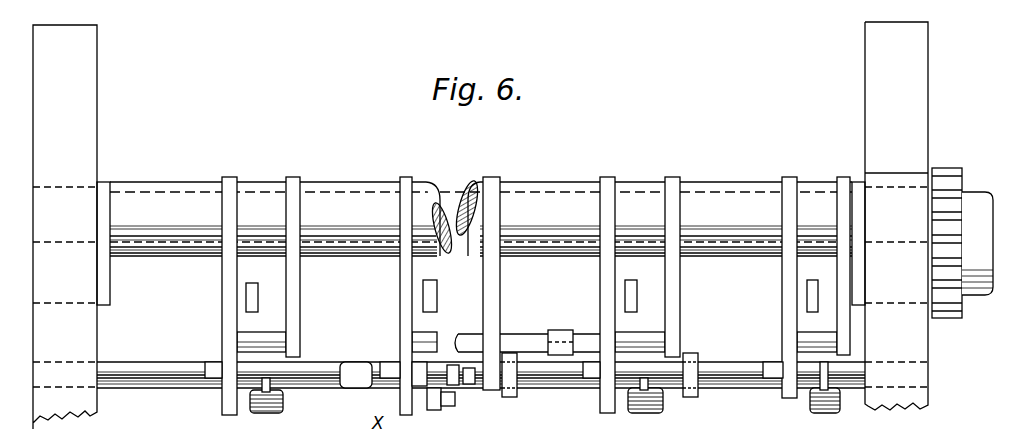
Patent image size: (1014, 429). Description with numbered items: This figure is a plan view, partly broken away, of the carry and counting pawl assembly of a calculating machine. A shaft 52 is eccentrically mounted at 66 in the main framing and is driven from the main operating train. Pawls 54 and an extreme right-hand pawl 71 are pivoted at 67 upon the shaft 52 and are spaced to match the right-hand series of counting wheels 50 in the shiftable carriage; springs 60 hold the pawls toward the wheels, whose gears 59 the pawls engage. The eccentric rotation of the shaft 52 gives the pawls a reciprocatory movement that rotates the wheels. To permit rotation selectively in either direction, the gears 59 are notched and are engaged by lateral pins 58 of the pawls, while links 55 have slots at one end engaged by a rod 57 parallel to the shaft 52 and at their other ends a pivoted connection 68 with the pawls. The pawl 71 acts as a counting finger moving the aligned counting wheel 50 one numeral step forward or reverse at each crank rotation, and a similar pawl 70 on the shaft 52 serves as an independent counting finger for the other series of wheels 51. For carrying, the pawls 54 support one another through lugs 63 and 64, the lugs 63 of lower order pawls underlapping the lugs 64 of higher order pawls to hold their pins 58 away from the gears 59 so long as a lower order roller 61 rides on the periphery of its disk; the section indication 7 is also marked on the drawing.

The section line 7 is at (472, 419).
The counting wheels 50 is at (527, 419).
The counting wheels 51 is at (148, 428).
The shaft 52 is at (722, 190).
The pawls 54 is at (400, 279).
The links 55 is at (240, 325).
The rod 57 is at (727, 370).
The lateral pins 58 is at (213, 372).
The gears 59 is at (253, 422).
The springs 60 is at (283, 402).
The roller 61 is at (510, 392).
The lugs 63 is at (578, 340).
The lugs 64 is at (513, 342).
The eccentric mounting 66 is at (86, 301).
The pivot 67 is at (262, 185).
The pivoted connection 68 is at (268, 287).
The pawl 70 is at (222, 284).
The pawl 71 is at (783, 288).